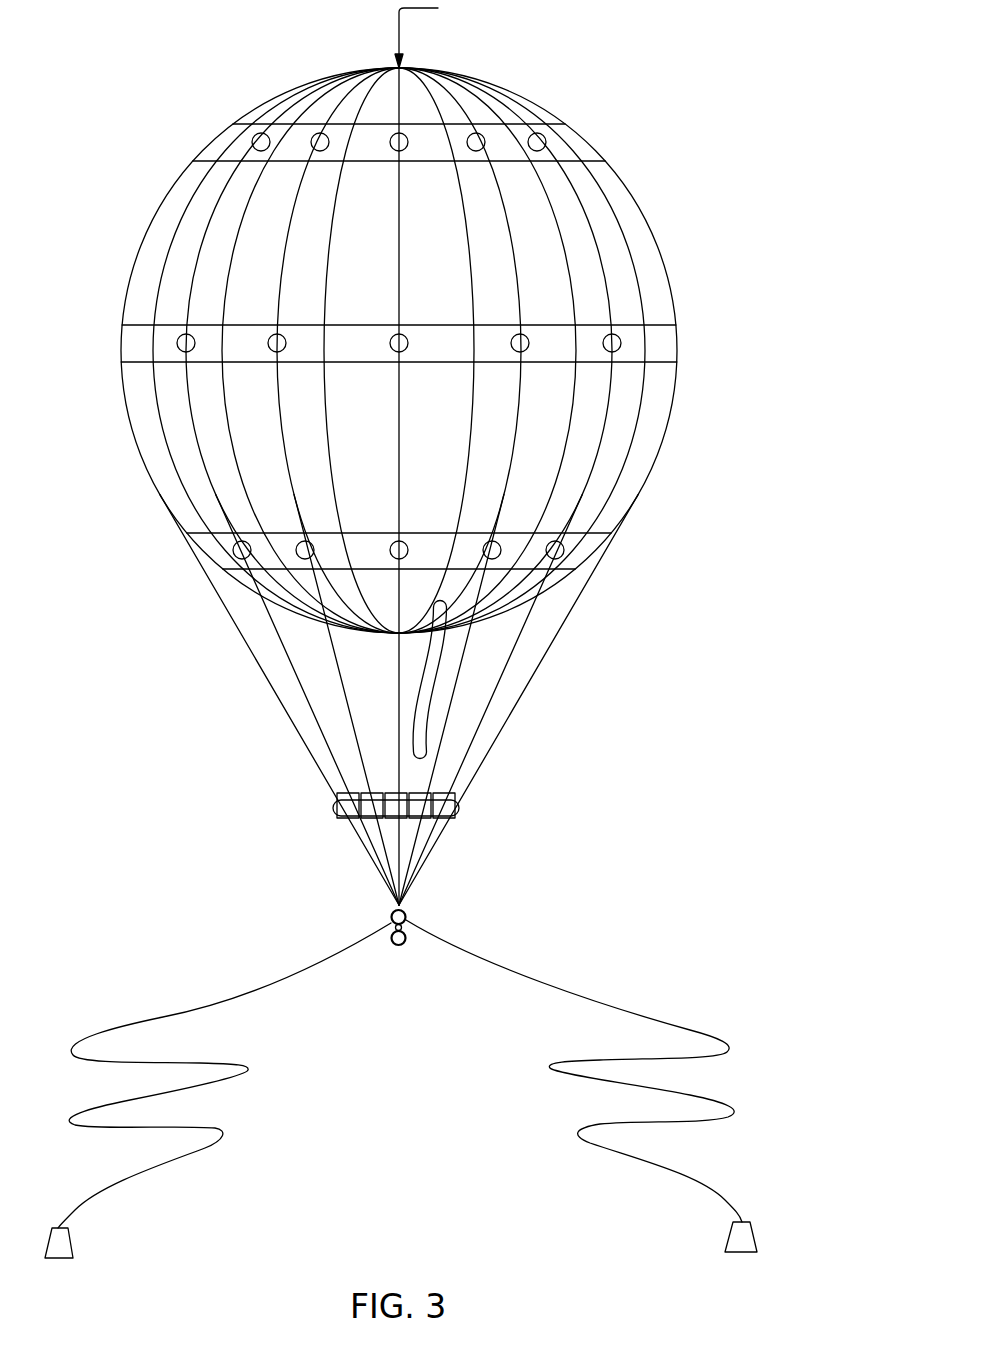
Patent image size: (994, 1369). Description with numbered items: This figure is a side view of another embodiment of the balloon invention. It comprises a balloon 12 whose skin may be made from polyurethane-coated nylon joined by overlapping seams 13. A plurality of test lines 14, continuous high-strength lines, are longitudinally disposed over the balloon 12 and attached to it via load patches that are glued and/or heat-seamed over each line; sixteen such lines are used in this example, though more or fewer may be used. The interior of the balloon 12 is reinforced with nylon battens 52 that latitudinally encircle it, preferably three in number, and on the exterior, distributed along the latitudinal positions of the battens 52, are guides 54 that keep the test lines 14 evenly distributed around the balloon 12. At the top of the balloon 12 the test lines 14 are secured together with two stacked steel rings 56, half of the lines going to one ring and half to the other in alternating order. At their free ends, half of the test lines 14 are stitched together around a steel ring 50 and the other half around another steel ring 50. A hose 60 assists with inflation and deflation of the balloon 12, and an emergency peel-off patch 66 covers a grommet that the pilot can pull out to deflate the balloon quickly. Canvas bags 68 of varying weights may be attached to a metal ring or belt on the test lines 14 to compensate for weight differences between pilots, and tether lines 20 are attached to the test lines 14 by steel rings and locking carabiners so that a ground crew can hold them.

The balloon 12 is at (620, 435).
The overlapping seams 13 is at (142, 254).
The test lines 14 is at (570, 621).
The tether lines 20 is at (258, 1072).
The steel ring 50 is at (404, 910).
The nylon battens 52 is at (121, 342).
The guides 54 is at (538, 132).
The steel rings 56 is at (434, 34).
The hose 60 is at (427, 718).
The emergency peel-off patch 66 is at (525, 497).
The canvas bags 68 is at (450, 796).